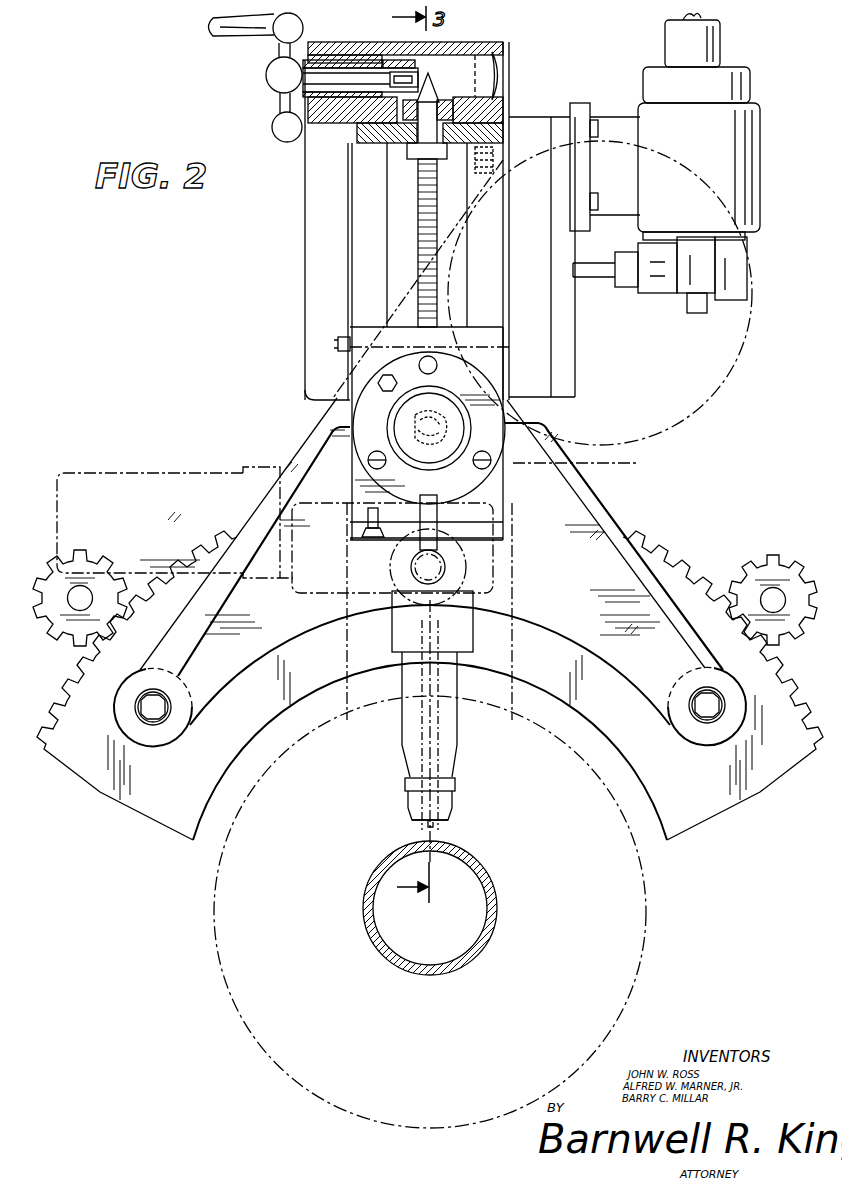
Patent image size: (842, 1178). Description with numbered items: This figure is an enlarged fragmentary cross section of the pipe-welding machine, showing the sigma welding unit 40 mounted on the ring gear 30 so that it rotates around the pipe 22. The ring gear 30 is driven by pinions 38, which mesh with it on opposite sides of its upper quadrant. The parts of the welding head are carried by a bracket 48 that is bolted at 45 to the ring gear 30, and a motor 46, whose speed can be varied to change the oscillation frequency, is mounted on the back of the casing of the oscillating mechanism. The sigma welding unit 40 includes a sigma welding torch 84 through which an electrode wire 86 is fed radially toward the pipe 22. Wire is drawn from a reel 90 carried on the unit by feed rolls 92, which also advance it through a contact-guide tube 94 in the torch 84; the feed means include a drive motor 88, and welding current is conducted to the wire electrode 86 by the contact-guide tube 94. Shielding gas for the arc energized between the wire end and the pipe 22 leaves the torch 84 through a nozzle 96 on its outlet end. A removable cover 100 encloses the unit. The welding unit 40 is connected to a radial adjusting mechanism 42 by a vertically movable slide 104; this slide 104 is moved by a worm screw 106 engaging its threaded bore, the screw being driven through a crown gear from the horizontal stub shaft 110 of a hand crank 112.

The pipe 22 is at (496, 915).
The ring gear 30 is at (730, 772).
The pinions 38 is at (92, 552).
The sigma welding unit 40 is at (637, 458).
The mechanism for adjusting radially 42 is at (343, 42).
The bolt 45 is at (160, 713).
The motor 46 is at (760, 148).
The bracket 48 is at (597, 278).
The sigma welding torch 84 is at (457, 765).
The electrode wire 86 is at (434, 833).
The drive motor 88 is at (227, 472).
The reel 90 is at (692, 414).
The feed rolls 92 is at (468, 520).
The contact-guide tube 94 is at (418, 763).
The nozzle 96 is at (452, 804).
The removable cover 100 is at (744, 320).
The slide 104 is at (357, 360).
The worm screw 106 is at (420, 221).
The horizontal stub shaft 110 is at (348, 72).
The hand crank 112 is at (232, 42).